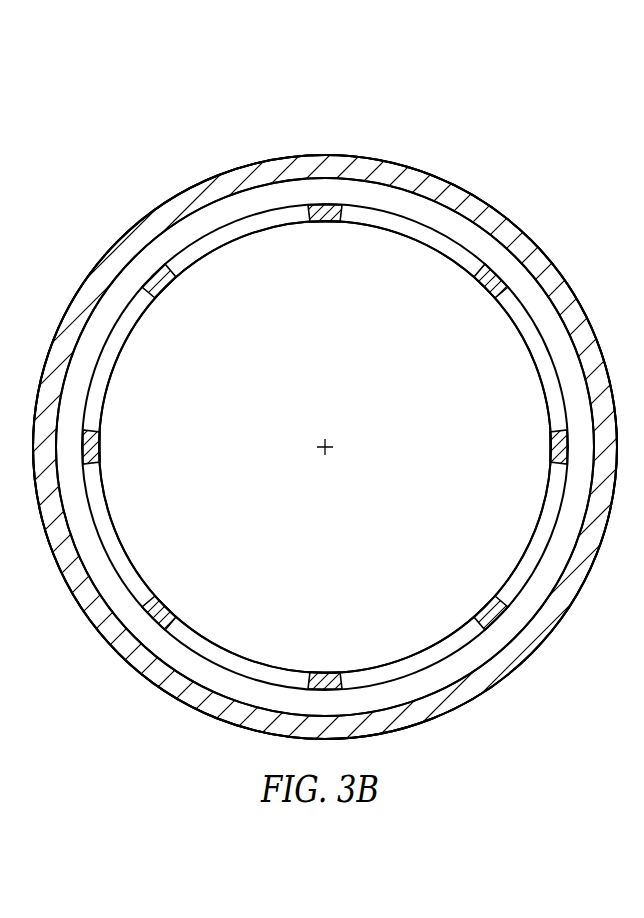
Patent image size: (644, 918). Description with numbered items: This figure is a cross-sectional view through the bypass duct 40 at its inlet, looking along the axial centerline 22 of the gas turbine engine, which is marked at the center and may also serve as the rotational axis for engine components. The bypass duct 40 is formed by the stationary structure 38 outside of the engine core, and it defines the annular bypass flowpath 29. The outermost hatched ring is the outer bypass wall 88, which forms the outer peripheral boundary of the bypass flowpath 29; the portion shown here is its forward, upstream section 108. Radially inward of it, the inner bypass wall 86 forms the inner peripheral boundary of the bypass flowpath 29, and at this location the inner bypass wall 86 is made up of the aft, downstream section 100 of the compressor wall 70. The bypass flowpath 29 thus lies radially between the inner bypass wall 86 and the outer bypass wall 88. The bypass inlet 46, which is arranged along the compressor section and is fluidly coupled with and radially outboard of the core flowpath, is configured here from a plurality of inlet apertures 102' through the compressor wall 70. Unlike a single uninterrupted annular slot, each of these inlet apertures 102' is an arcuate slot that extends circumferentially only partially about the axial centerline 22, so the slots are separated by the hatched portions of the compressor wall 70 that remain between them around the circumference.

The outer bypass wall 88 is at (369, 151).
The stationary structure 38 is at (325, 403).
The bypass duct 40 is at (325, 403).
The upstream section of the outer bypass wall 108 is at (526, 231).
The bypass flowpath 29 is at (538, 294).
The inlet apertures 102' is at (322, 459).
The inner bypass wall 86 is at (338, 234).
The compressor wall 70 is at (447, 308).
The downstream section of the compressor wall 100 is at (488, 289).
The bypass inlet 46 is at (535, 366).
The axial centerline 22 is at (333, 452).